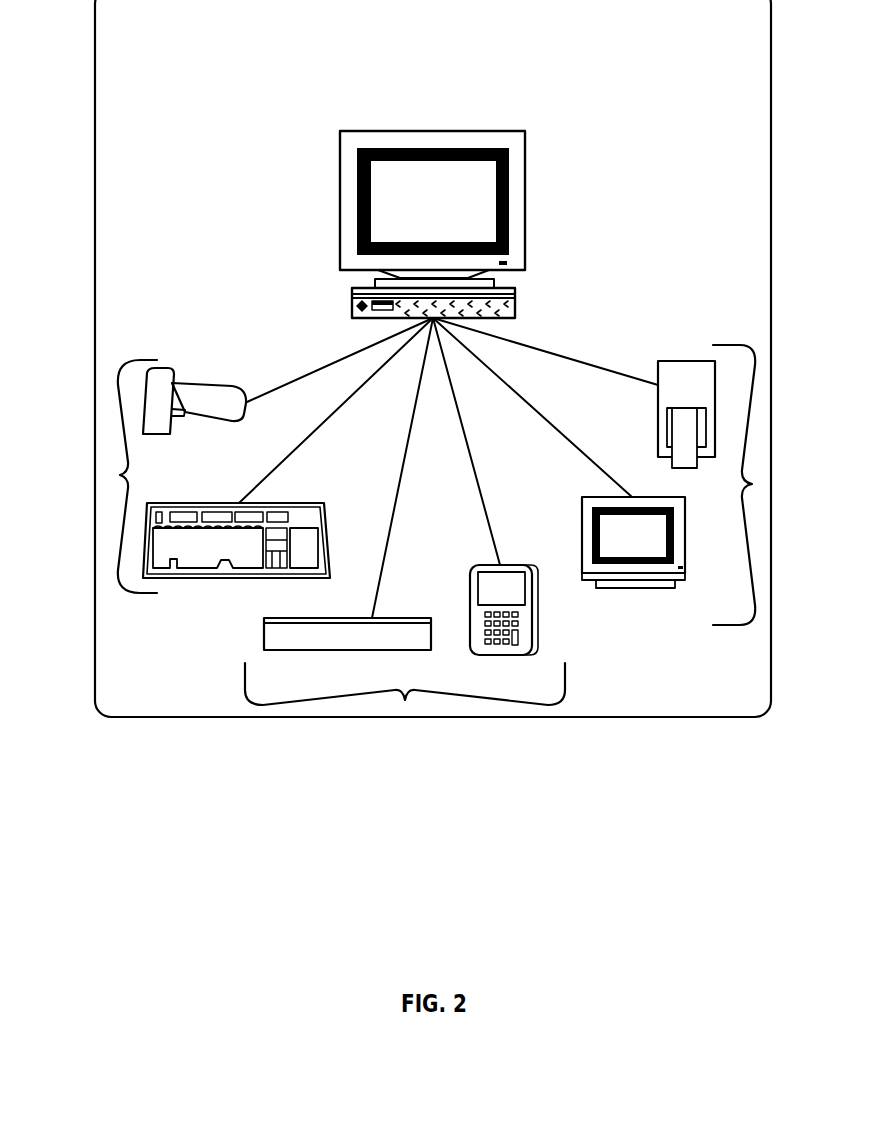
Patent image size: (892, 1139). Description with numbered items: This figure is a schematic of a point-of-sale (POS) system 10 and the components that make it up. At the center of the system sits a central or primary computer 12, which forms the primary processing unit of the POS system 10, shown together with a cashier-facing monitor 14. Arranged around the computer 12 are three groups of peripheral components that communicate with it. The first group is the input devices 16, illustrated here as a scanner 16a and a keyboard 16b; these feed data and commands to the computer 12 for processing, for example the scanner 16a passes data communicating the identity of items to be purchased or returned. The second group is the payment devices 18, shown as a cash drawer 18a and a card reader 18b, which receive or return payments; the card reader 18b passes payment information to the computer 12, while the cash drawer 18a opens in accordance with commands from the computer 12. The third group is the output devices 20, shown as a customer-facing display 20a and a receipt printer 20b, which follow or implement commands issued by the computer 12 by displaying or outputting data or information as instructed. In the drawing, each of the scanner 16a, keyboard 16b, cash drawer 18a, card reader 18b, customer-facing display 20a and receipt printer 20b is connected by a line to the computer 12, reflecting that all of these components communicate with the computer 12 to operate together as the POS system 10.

The POS system 10 is at (582, 55).
The computer 12 is at (540, 284).
The monitor 14 is at (318, 166).
The input devices 16 is at (120, 475).
The scanner 16a is at (208, 400).
The keyboard 16b is at (300, 515).
The payment devices 18 is at (405, 700).
The cash drawer 18a is at (348, 635).
The card reader 18b is at (490, 570).
The output devices 20 is at (752, 484).
The customer-facing display 20a is at (630, 550).
The receipt printer 20b is at (678, 382).